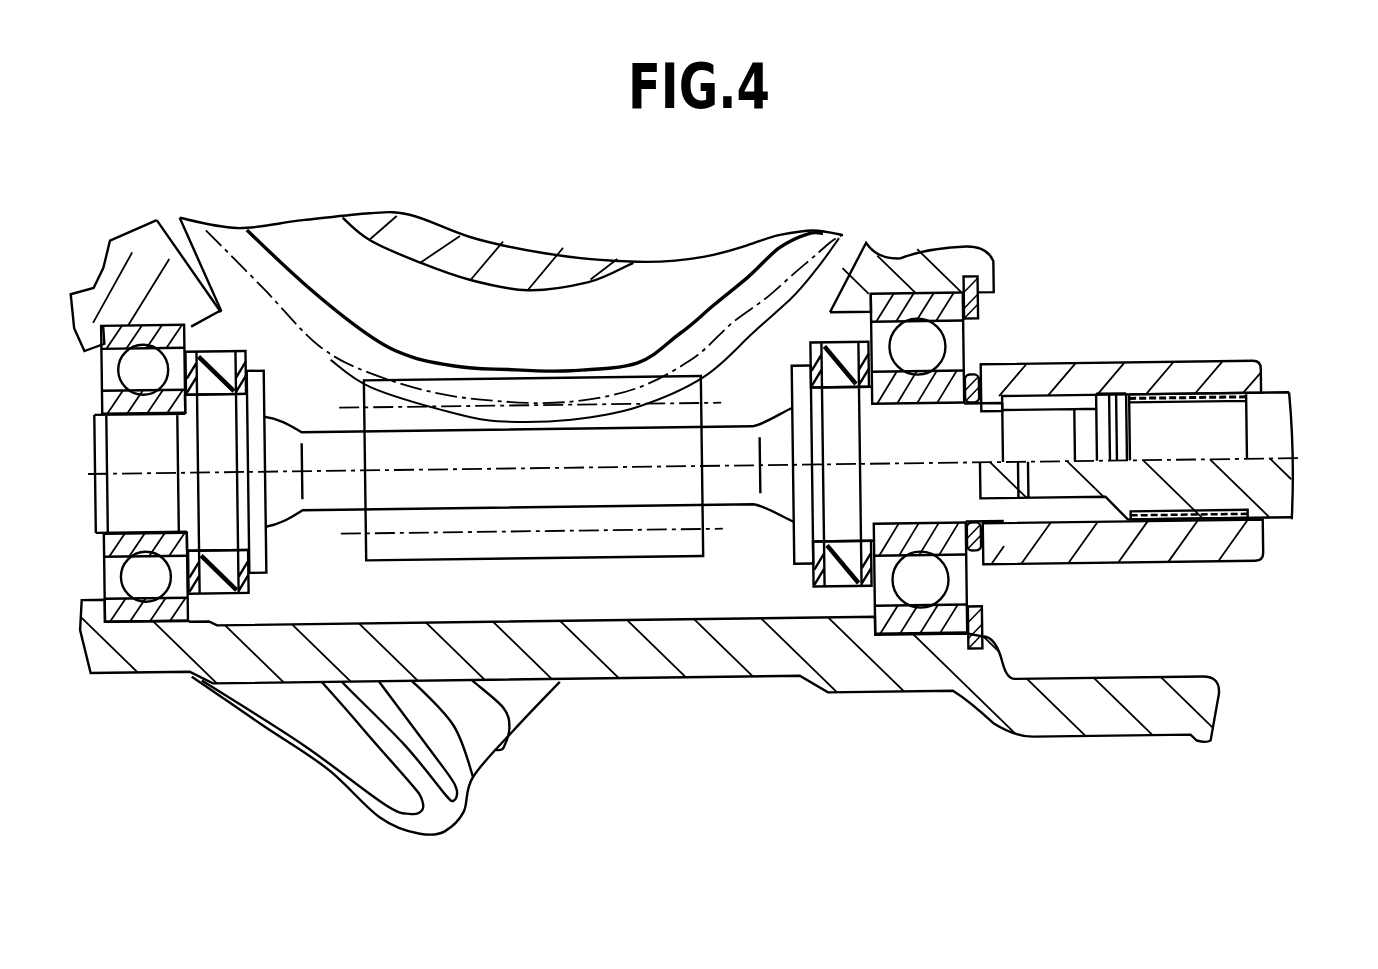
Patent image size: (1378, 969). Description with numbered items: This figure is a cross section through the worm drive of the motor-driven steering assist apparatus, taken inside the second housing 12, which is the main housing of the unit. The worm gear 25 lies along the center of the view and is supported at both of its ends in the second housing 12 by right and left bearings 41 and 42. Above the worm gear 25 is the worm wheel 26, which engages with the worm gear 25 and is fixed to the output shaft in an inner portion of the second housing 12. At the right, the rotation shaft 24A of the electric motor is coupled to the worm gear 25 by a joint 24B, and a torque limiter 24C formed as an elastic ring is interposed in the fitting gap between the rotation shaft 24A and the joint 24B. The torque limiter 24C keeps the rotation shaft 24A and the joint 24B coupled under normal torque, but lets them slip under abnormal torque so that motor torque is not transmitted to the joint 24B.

The second housing 12 is at (621, 660).
The worm gear 25 is at (560, 557).
The worm wheel 26 is at (372, 349).
The bearing 41 is at (140, 580).
The bearing 42 is at (916, 590).
The rotation shaft 24A is at (1262, 505).
The joint 24B is at (1117, 553).
The torque limiter 24C is at (1207, 529).